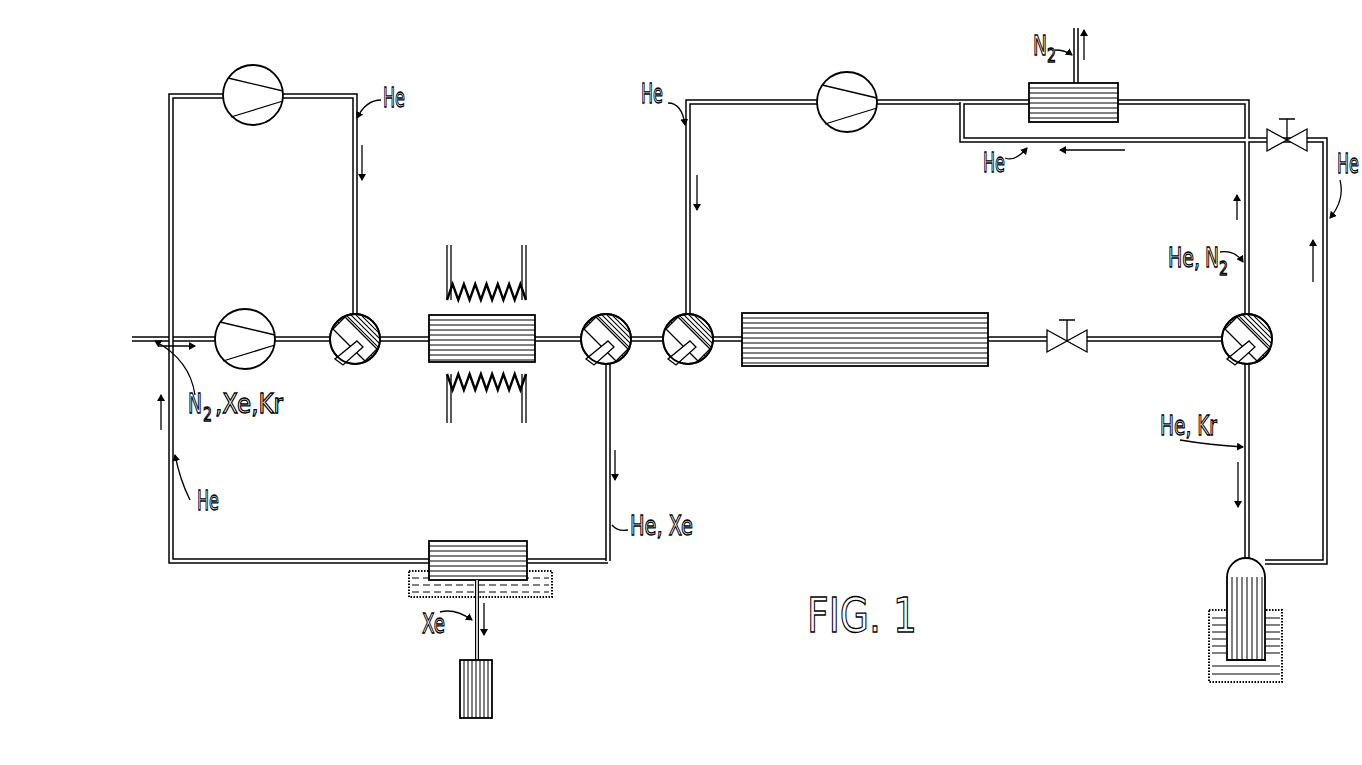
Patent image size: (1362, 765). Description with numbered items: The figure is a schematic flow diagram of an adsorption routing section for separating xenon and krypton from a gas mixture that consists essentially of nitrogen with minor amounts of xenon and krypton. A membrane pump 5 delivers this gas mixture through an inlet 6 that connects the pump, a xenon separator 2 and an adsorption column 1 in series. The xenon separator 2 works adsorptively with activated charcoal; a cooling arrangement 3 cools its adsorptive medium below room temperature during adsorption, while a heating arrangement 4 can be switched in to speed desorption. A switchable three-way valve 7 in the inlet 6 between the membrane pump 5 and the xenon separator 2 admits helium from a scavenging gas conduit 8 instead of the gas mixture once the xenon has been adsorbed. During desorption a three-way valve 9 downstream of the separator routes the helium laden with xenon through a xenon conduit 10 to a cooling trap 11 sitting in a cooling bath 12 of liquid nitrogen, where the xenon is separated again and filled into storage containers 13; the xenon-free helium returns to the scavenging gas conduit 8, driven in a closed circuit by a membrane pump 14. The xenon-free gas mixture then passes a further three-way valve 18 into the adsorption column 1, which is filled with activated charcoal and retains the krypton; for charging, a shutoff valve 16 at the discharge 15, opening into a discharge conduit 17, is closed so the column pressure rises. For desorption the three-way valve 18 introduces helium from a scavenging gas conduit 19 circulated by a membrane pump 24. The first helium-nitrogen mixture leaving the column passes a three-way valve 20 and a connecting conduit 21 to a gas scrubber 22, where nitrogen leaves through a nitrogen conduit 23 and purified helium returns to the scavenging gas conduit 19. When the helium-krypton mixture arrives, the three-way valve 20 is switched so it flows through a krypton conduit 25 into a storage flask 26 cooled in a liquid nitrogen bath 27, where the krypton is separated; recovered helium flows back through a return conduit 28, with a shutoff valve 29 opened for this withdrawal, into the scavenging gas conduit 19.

The adsorption column 1 is at (855, 330).
The xenon separator 2 is at (445, 340).
The cooling arrangement 3 is at (488, 390).
The heating arrangement 4 is at (488, 285).
The membrane pump 5 is at (232, 330).
The inlet 6 is at (297, 337).
The three-way valve 7 is at (357, 362).
The scavenging gas conduit 8 is at (358, 232).
The three-way valve 9 is at (617, 352).
The xenon conduit 10 is at (612, 425).
The cooling trap 11 is at (470, 558).
The cooling bath 12 is at (410, 587).
The storage containers 13 is at (472, 690).
The membrane pump 14 is at (258, 86).
The discharge 15 is at (1027, 336).
The shutoff valve 16 is at (1078, 338).
The discharge conduit 17 is at (1135, 337).
The three-way valve 18 is at (700, 325).
The scavenging gas conduit 19 is at (687, 200).
The three-way valve 20 is at (1238, 323).
The connecting conduit 21 is at (1197, 102).
The gas scrubber 22 is at (1045, 100).
The nitrogen conduit 23 is at (1082, 72).
The membrane pump 24 is at (835, 100).
The krypton conduit 25 is at (1250, 410).
The storage flask 26 is at (1238, 582).
The liquid nitrogen bath 27 is at (1212, 645).
The return conduit 28 is at (1324, 365).
The shutoff valve 29 is at (1297, 135).